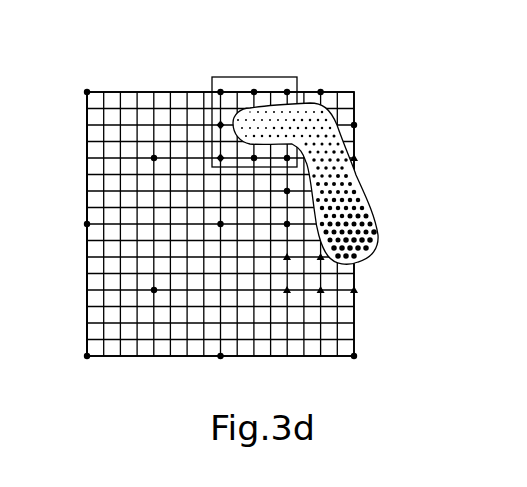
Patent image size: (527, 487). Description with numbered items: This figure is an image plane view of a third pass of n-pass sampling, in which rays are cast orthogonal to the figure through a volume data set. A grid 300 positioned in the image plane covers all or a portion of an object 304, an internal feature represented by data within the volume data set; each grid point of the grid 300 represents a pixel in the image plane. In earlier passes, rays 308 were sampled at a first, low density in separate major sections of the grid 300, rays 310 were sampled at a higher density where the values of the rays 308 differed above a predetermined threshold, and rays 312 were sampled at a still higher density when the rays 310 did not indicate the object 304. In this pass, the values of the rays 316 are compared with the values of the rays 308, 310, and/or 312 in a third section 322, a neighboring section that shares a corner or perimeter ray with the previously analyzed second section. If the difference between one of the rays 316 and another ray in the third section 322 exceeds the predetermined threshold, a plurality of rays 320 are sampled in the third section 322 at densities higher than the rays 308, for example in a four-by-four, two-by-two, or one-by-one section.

The grid 300 is at (128, 92).
The object 304 is at (378, 222).
The rays 308 is at (87, 93).
The rays 310 is at (355, 292).
The rays 312 is at (322, 293).
The rays 316 is at (289, 91).
The rays 320 is at (255, 93).
The third section 322 is at (263, 77).